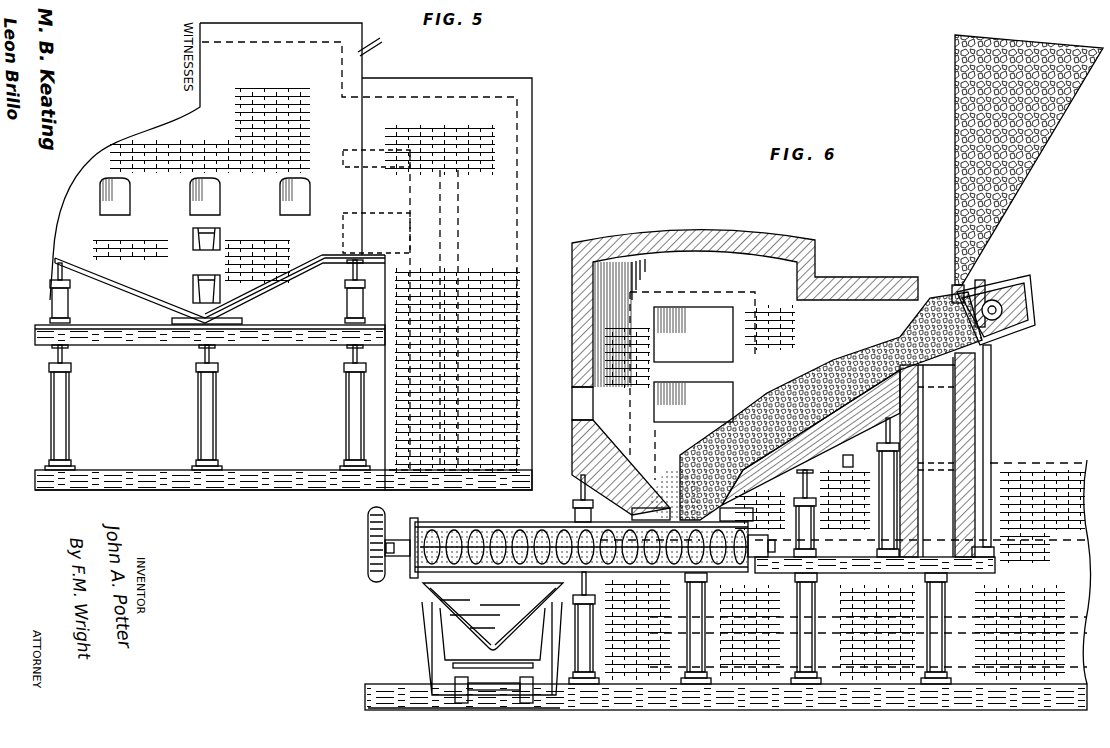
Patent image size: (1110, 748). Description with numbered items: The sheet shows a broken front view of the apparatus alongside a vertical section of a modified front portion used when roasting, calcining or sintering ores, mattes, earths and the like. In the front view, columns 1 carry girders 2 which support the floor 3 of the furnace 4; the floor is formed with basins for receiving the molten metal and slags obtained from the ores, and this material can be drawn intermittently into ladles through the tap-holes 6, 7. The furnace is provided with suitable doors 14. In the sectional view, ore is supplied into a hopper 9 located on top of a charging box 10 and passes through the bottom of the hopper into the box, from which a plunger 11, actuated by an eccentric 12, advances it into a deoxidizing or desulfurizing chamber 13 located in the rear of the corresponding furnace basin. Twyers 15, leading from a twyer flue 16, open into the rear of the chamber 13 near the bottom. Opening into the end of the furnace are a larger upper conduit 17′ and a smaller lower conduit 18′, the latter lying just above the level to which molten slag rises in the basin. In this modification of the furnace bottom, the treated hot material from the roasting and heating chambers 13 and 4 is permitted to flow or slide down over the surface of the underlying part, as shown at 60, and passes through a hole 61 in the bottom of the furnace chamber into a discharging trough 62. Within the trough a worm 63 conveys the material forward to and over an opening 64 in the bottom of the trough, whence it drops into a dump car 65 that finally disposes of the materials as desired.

In FIG. 5, the columns 1 is at (62, 414).
In FIG. 5, the girders 2 is at (210, 334).
In FIG. 5, the floor 3 is at (220, 289).
In FIG. 5, the furnace 4 is at (283, 256).
In FIG. 5, the tap-hole 6 is at (220, 234).
In FIG. 5, the tap-hole 7 is at (193, 284).
In FIG. 6, the hoppers 9 is at (955, 150).
In FIG. 6, the charging boxes 10 is at (962, 292).
In FIG. 6, the plungers 11 is at (988, 350).
In FIG. 6, the eccentrics 12 is at (998, 286).
In FIG. 6, the deoxidizing or desulfurizing chambers 13 is at (745, 375).
In FIG. 5, the doors 14 is at (131, 200).
In FIG. 6, the twyers 15 is at (905, 362).
In FIG. 6, the twyer flue 16 is at (952, 455).
In FIG. 6, the upper conduit 17′ is at (693, 334).
In FIG. 6, the lower conduit 18′ is at (693, 402).
In FIG. 6, the surface of the underlying part 60 is at (831, 406).
In FIG. 6, the hole 61 is at (672, 492).
In FIG. 6, the discharging trough 62 is at (528, 518).
In FIG. 6, the worm 63 is at (585, 566).
In FIG. 6, the opening 64 is at (493, 609).
In FIG. 6, the dump car 65 is at (465, 655).